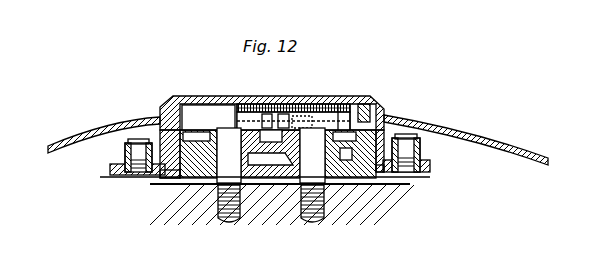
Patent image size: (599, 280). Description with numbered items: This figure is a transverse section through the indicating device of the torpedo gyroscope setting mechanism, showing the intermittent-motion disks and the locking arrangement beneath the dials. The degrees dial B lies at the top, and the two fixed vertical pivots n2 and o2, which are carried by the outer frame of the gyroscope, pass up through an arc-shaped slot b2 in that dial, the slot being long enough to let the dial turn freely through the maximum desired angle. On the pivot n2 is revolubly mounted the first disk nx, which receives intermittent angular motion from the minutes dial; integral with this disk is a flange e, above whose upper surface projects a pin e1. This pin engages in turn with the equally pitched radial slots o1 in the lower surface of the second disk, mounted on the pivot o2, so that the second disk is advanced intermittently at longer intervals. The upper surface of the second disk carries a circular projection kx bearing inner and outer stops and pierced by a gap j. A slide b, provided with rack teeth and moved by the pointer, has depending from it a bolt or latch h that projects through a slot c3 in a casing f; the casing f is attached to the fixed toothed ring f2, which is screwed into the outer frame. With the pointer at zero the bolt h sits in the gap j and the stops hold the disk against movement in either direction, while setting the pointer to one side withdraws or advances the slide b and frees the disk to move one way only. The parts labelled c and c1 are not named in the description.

The flange e is at (156, 118).
The outer plate c1 is at (452, 136).
The casing f is at (162, 113).
The slot c3 is at (208, 123).
The seat c is at (243, 125).
The bolt or latch h is at (250, 108).
The slide b is at (267, 114).
The gap j is at (296, 120).
The pin e1 is at (298, 119).
The slot b2 is at (348, 173).
The fixed vertical pivot n2 is at (213, 188).
The second fixed vertical pivot o2 is at (314, 167).
The degrees dial B is at (152, 180).
The fixed toothed ring f2 is at (398, 175).
The radial slots o1 is at (339, 104).
The disk nx is at (172, 185).
The circular projection kx is at (366, 101).